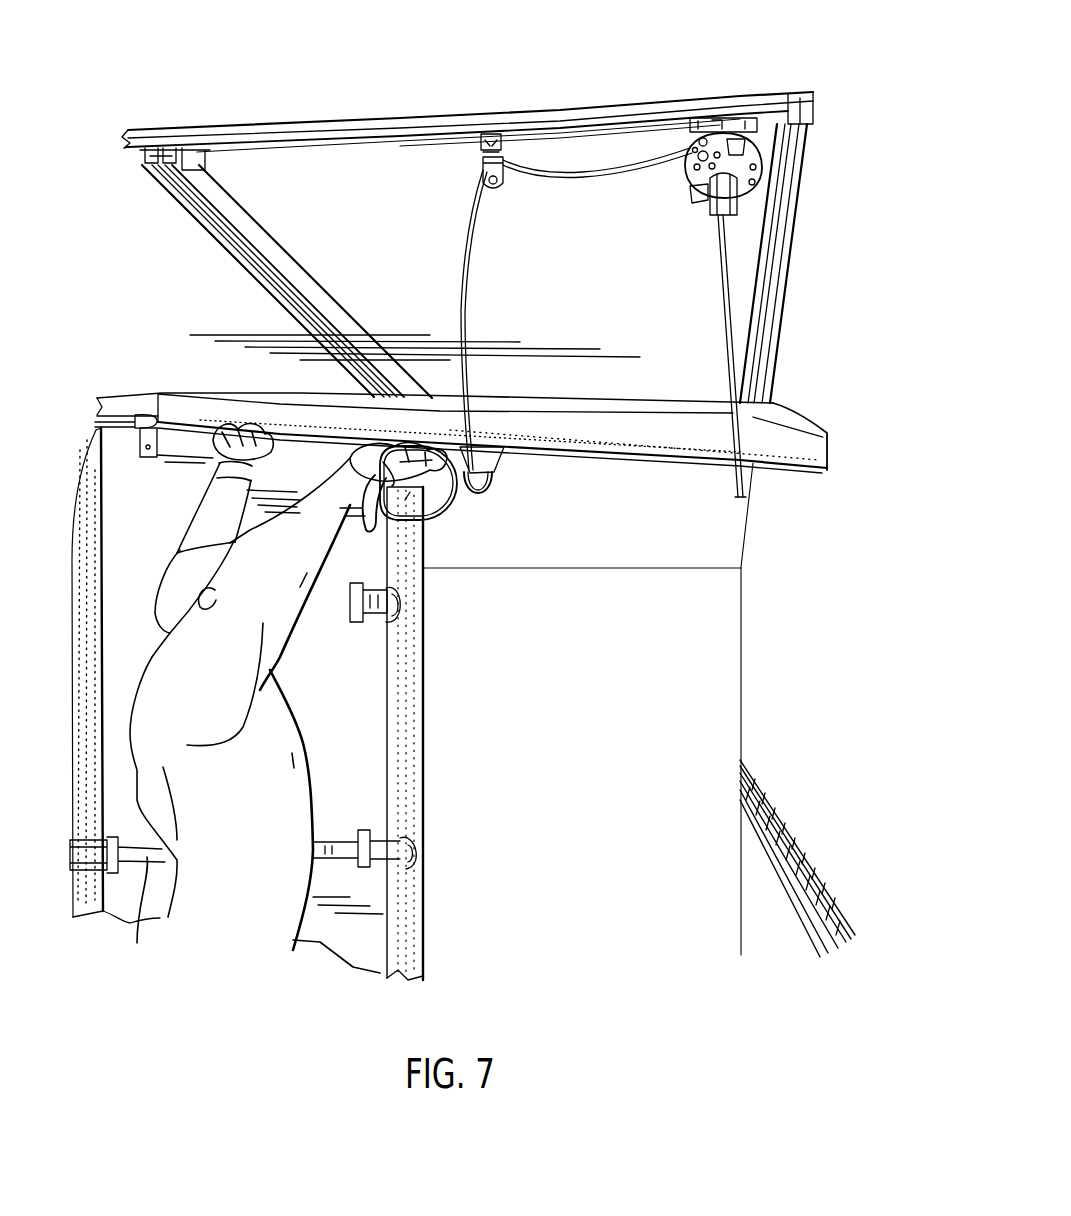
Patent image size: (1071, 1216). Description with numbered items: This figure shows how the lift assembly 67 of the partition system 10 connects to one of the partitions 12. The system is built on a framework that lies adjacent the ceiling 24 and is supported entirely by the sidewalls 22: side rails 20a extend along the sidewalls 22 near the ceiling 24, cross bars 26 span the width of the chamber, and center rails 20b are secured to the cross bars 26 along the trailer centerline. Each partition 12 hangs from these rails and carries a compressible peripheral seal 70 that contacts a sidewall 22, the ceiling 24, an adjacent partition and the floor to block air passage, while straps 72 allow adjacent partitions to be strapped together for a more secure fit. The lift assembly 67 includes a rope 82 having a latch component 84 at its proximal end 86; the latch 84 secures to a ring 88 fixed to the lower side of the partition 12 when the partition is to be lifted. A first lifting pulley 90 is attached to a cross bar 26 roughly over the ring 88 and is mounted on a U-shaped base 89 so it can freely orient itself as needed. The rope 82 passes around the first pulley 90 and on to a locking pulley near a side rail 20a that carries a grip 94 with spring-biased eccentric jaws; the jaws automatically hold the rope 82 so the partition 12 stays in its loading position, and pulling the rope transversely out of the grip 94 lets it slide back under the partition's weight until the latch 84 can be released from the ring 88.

The partition system 10 is at (243, 62).
The partition 12 is at (682, 413).
The side rail 20a is at (784, 297).
The center rail 20b is at (168, 190).
The sidewall 22 is at (753, 610).
The ceiling 24 is at (390, 197).
The cross bar 26 is at (383, 126).
The lift assembly 67 is at (834, 99).
The peripheral seal 70 is at (614, 448).
The strap 72 is at (147, 860).
The rope 82 is at (600, 160).
The latch component 84 is at (440, 507).
The proximal end 86 is at (363, 519).
The ring 88 is at (492, 490).
The U-shaped base 89 is at (488, 130).
The first lifting pulley 90 is at (504, 183).
The grip 94 is at (760, 197).